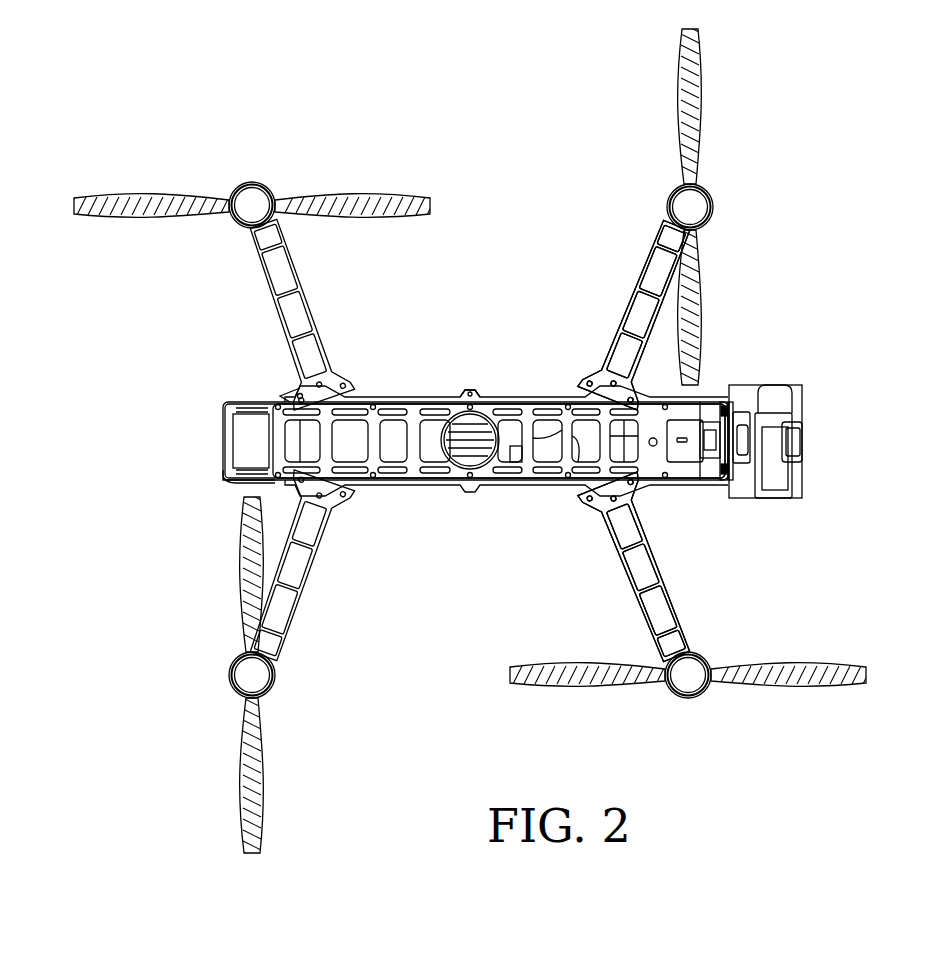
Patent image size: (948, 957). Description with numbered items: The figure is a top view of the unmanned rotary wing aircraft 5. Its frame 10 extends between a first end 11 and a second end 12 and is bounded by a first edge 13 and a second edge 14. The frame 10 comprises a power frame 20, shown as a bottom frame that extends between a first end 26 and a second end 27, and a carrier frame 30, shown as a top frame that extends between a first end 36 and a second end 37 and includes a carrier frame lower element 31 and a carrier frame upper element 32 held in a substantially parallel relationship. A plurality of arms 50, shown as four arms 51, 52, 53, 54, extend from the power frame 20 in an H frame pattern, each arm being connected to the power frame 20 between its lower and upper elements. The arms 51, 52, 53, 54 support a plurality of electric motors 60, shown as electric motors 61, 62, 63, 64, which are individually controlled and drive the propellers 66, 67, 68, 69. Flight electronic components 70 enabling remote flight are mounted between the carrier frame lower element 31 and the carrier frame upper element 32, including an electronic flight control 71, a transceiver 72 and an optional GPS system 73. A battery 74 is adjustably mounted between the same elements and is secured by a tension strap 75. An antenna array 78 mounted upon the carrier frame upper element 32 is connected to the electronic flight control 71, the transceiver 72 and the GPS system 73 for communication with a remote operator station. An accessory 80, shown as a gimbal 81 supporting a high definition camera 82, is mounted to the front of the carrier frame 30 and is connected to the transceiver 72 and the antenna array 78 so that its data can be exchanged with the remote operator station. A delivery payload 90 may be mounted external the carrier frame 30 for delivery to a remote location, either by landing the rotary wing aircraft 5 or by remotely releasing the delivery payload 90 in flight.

The rotary wing aircraft 5 is at (100, 342).
The frame 10 is at (405, 402).
The first end 11 is at (730, 405).
The second end 12 is at (225, 402).
The first edge 13 is at (505, 402).
The second edge 14 is at (565, 480).
The power frame 20 is at (410, 484).
The first end 26 is at (640, 490).
The second end 27 is at (300, 392).
The carrier frame 30 is at (543, 402).
The carrier frame lower element 31 is at (228, 478).
The carrier frame upper element 32 is at (283, 440).
The first end 36 is at (710, 480).
The second end 37 is at (228, 484).
The plurality of arms 50 is at (713, 604).
The arm 51 is at (660, 572).
The arm 52 is at (300, 600).
The arm 53 is at (660, 258).
The arm 54 is at (270, 290).
The plurality of electric motors 60 is at (750, 176).
The electric motor 61 is at (689, 698).
The electric motor 62 is at (229, 676).
The electric motor 63 is at (667, 208).
The electric motor 64 is at (283, 223).
The propeller 66 is at (798, 688).
The propeller 67 is at (265, 750).
The propeller 68 is at (683, 103).
The propeller 69 is at (155, 199).
The flight electronic components 70 is at (470, 368).
The electronic flight control 71 is at (512, 456).
The transceiver 72 is at (556, 476).
The GPS system 73 is at (592, 480).
The battery 74 is at (240, 423).
The tension strap 75 is at (303, 447).
The antenna array 78 is at (465, 456).
The accessory 80 is at (853, 391).
The gimbal 81 is at (741, 482).
The high definition camera 82 is at (803, 443).
The delivery payload 90 is at (836, 525).